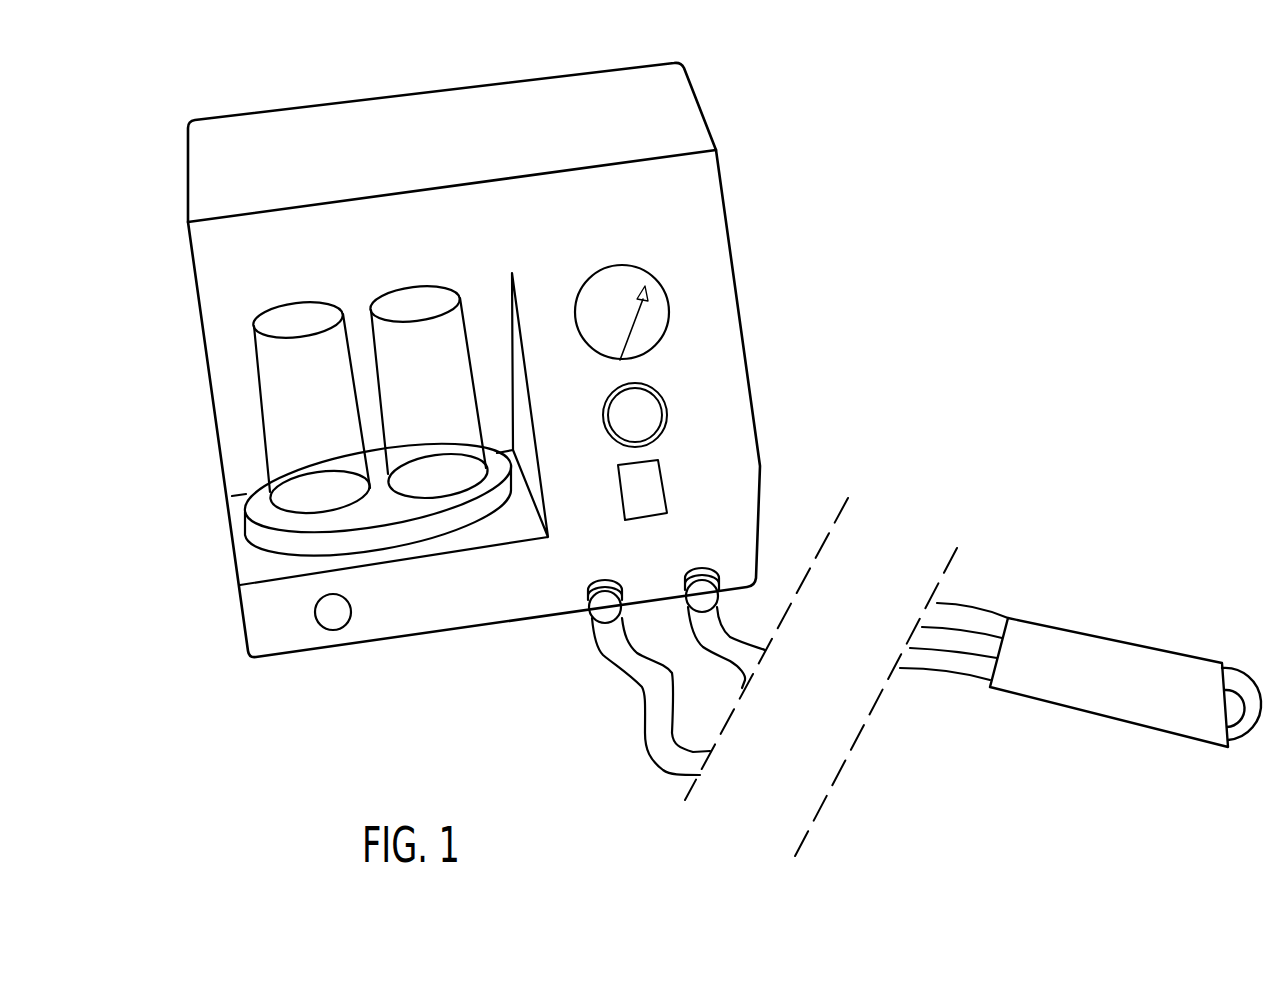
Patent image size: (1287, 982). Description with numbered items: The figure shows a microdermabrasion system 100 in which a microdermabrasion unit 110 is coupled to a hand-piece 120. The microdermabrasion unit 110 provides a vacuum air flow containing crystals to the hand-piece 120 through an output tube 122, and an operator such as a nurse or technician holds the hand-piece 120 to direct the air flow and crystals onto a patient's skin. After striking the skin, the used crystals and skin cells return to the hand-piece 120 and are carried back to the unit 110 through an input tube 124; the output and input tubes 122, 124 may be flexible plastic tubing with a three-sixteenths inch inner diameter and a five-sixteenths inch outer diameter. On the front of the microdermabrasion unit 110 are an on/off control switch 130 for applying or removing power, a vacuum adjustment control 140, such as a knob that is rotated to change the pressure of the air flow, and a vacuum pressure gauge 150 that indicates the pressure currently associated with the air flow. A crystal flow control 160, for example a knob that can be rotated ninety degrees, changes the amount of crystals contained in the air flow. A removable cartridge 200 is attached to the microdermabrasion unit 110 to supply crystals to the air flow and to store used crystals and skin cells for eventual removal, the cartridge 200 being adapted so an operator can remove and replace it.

The microdermabrasion system 100 is at (718, 459).
The microdermabrasion unit 110 is at (383, 95).
The hand-piece 120 is at (1113, 635).
The output tube 122 is at (733, 632).
The input tube 124 is at (603, 657).
The on/off control switch 130 is at (667, 485).
The vacuum adjustment control 140 is at (667, 410).
The vacuum pressure gauge 150 is at (662, 287).
The crystal flow control 160 is at (352, 615).
The removable cartridge 200 is at (242, 530).